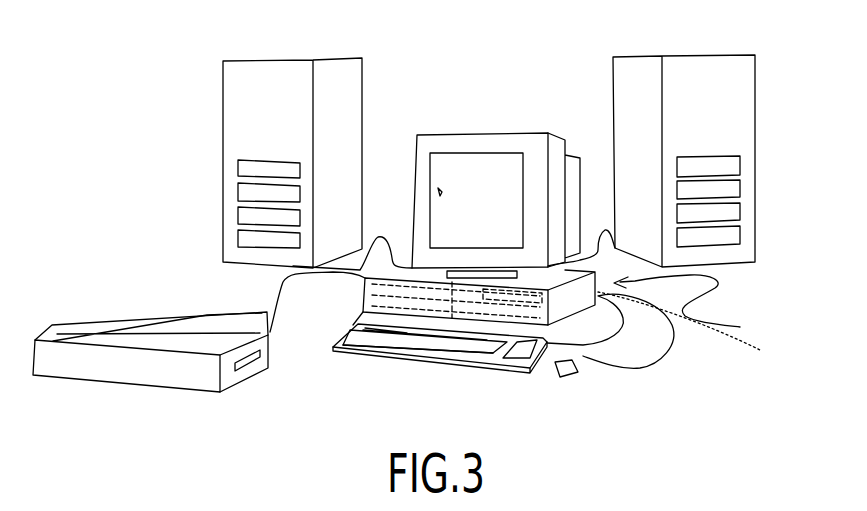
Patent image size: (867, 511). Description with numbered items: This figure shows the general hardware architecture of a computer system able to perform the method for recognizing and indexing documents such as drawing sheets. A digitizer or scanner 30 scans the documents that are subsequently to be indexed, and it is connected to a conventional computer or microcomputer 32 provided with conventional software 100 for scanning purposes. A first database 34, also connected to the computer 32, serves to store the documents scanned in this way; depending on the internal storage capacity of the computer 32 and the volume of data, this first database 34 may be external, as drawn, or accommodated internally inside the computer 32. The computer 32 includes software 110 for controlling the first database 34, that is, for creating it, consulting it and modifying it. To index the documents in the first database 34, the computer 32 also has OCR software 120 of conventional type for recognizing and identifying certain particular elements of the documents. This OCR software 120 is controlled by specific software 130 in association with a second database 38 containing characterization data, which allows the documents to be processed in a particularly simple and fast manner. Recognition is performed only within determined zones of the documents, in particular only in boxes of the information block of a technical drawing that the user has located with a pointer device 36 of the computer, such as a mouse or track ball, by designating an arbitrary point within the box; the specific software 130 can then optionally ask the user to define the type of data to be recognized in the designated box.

The scanner 30 is at (152, 315).
The computer 32 is at (686, 312).
The first database 34 is at (247, 121).
The pointer device 36 is at (571, 368).
The second database 38 is at (733, 118).
The software 100 is at (365, 292).
The software 110 is at (490, 266).
The OCR software 120 is at (362, 325).
The specific software 130 is at (490, 370).